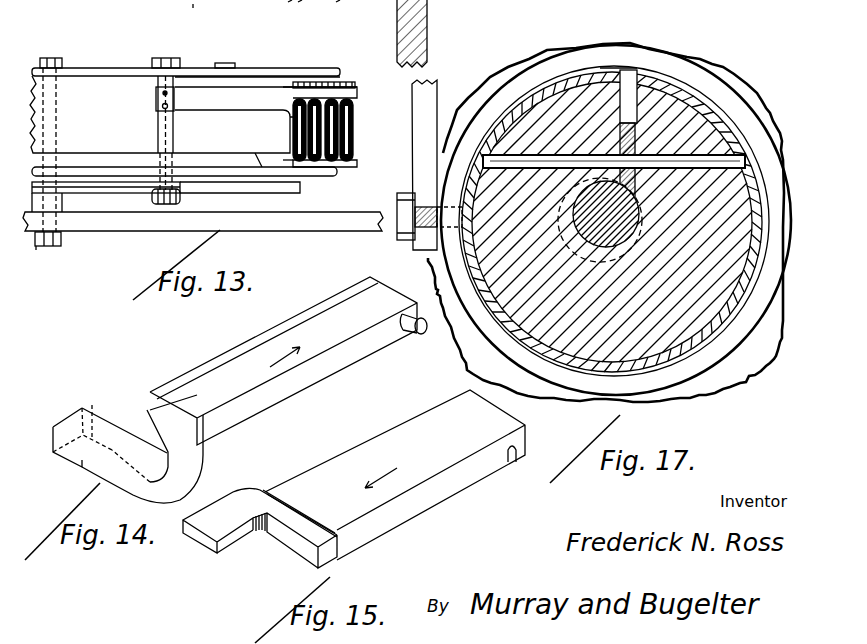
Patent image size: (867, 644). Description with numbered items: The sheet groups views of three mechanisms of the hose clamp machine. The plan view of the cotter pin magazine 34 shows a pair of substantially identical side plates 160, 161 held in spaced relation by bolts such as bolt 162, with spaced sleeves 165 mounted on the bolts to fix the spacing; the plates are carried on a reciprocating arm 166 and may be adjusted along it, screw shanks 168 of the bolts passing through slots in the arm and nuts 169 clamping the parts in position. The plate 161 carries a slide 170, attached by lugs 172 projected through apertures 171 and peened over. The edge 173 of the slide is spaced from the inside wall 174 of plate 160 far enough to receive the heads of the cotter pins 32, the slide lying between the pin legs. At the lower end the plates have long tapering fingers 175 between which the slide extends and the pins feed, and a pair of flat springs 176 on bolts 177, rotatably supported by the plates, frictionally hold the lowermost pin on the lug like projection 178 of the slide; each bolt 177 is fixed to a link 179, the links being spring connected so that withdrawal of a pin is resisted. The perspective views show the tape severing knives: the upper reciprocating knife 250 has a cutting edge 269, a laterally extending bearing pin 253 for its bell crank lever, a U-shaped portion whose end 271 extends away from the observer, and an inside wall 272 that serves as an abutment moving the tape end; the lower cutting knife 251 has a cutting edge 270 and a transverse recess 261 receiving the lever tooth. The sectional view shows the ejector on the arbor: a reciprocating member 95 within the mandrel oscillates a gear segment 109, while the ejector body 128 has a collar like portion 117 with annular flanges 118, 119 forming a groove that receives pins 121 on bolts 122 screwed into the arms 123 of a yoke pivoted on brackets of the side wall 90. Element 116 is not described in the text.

In FIG. 13, the bolt 162 is at (53, 59).
In FIG. 13, the slide 170 is at (92, 85).
In FIG. 13, the bolt 177 is at (163, 127).
In FIG. 13, the side plate 161 is at (190, 68).
In FIG. 13, the lug 172 is at (227, 63).
In FIG. 13, the aperture 171 is at (237, 74).
In FIG. 13, the flat spring 176 is at (278, 100).
In FIG. 13, the tapering finger 175 is at (328, 76).
In FIG. 13, the lug like projection 178 is at (355, 110).
In FIG. 13, the arm 123 is at (420, 105).
In FIG. 13, the cotter pin 32 is at (357, 130).
In FIG. 13, the bolt 122 is at (406, 193).
In FIG. 13, the pin 121 is at (415, 252).
In FIG. 13, the side plate 160 is at (233, 176).
In FIG. 13, the edge of the slide 173 is at (263, 154).
In FIG. 13, the inside wall 174 is at (297, 167).
In FIG. 13, the reciprocating arm 166 is at (310, 224).
In FIG. 13, the cotter pin magazine 34 is at (120, 178).
In FIG. 13, the link 179 is at (135, 193).
In FIG. 13, the spaced sleeve 165 is at (58, 158).
In FIG. 13, the screw shank 168 is at (47, 246).
In FIG. 13, the nut 169 is at (35, 246).
In FIG. 13, the ejector body 128 is at (194, 5).
In FIG. 13, the collar like portion 117 is at (294, 0).
In FIG. 13, the annular flange 118 is at (300, 2).
In FIG. 17, the annular flange 118 is at (508, 75).
In FIG. 13, the annular flange 119 is at (346, 11).
In FIG. 17, the side wall 90 is at (427, 48).
In FIG. 17, the gear segment 109 is at (668, 78).
In FIG. 17, the ring 116 is at (750, 147).
In FIG. 17, the reciprocating member 95 is at (560, 231).
In FIG. 14, the end of the U-shaped portion 271 is at (72, 420).
In FIG. 14, the cutting edge 269 is at (92, 418).
In FIG. 14, the inside wall 272 is at (135, 412).
In FIG. 14, the reciprocating knife 250 is at (242, 370).
In FIG. 14, the bearing pin 253 is at (418, 336).
In FIG. 15, the lower cutting knife 251 is at (410, 437).
In FIG. 15, the transverse recess 261 is at (512, 462).
In FIG. 15, the cutting edge 270 is at (193, 538).